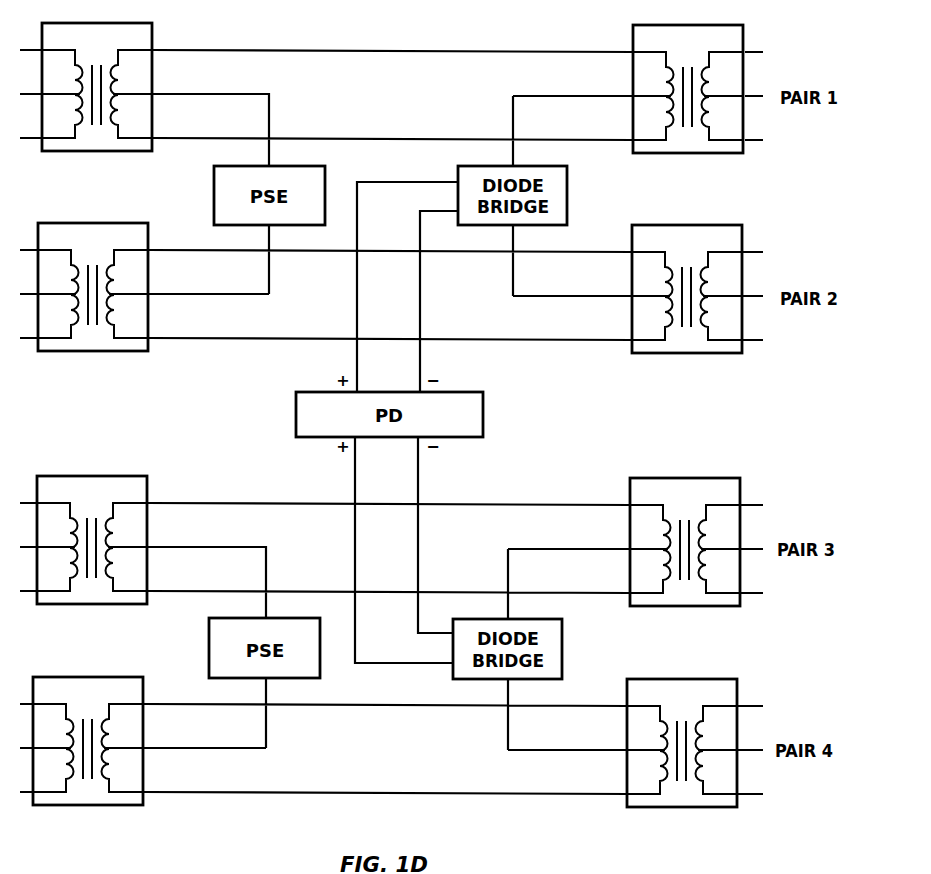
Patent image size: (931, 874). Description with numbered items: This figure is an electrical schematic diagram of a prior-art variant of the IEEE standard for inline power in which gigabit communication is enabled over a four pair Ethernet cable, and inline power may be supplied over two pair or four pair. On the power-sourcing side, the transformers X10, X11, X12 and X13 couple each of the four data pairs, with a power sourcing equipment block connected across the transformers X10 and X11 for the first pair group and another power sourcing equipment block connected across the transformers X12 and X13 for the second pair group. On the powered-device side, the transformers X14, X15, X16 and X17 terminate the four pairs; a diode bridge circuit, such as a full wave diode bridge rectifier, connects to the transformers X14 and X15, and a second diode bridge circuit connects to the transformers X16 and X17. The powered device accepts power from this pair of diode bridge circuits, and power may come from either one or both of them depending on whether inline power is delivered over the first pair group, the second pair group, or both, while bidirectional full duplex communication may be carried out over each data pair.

The transformer X10 is at (97, 87).
The transformer X11 is at (93, 287).
The transformer X12 is at (92, 540).
The transformer X13 is at (88, 741).
The transformer X14 is at (688, 89).
The transformer X15 is at (687, 289).
The transformer X16 is at (685, 542).
The transformer X17 is at (682, 743).